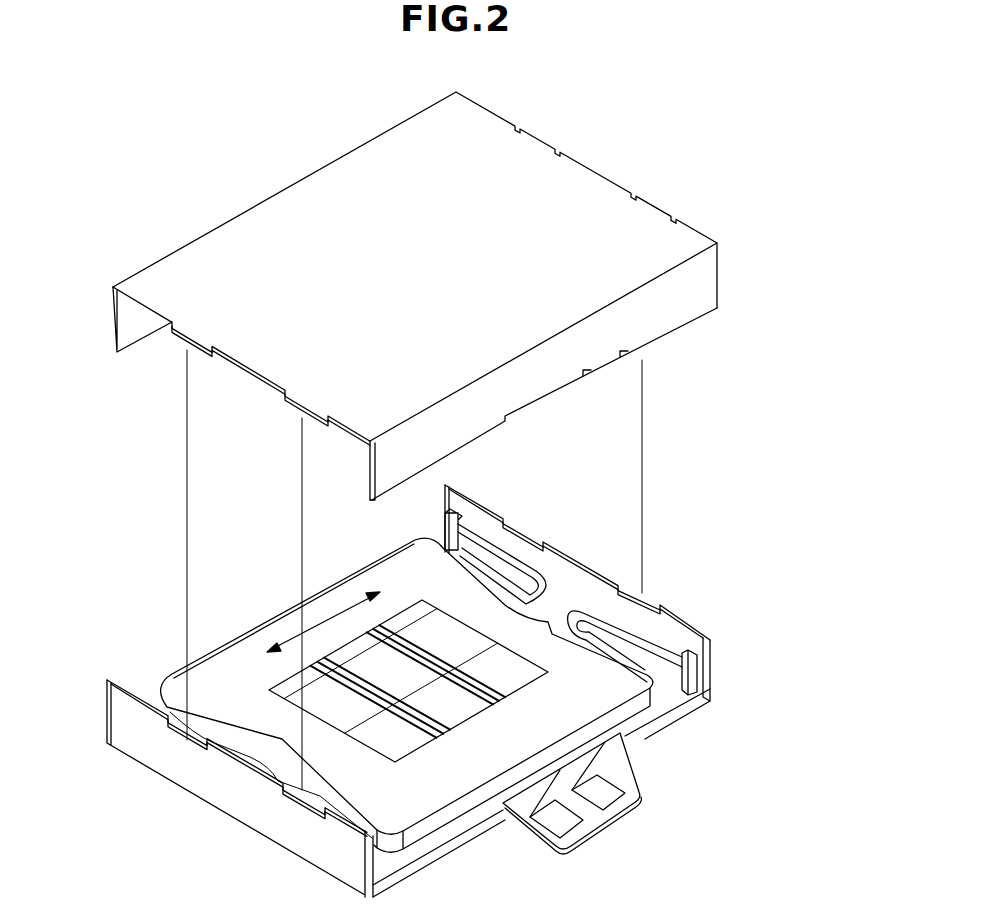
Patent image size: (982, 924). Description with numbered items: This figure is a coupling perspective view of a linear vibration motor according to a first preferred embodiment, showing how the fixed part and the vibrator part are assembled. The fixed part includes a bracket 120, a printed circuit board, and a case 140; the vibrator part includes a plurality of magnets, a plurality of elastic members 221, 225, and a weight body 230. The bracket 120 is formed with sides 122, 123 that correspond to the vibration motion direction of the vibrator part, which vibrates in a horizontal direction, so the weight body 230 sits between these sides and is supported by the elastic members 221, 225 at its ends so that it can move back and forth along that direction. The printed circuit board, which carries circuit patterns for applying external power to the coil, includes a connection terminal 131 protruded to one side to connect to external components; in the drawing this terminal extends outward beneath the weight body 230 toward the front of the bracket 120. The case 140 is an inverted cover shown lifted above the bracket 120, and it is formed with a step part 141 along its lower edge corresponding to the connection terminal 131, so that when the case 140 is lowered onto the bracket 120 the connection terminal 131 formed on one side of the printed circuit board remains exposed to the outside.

The bracket 120 is at (450, 691).
The side 122 is at (163, 762).
The side 123 is at (577, 567).
The connection terminal 131 is at (613, 790).
The case 140 is at (481, 441).
The step part 141 is at (553, 393).
The elastic member 221 is at (668, 635).
The elastic member 225 is at (507, 547).
The weight body 230 is at (224, 639).